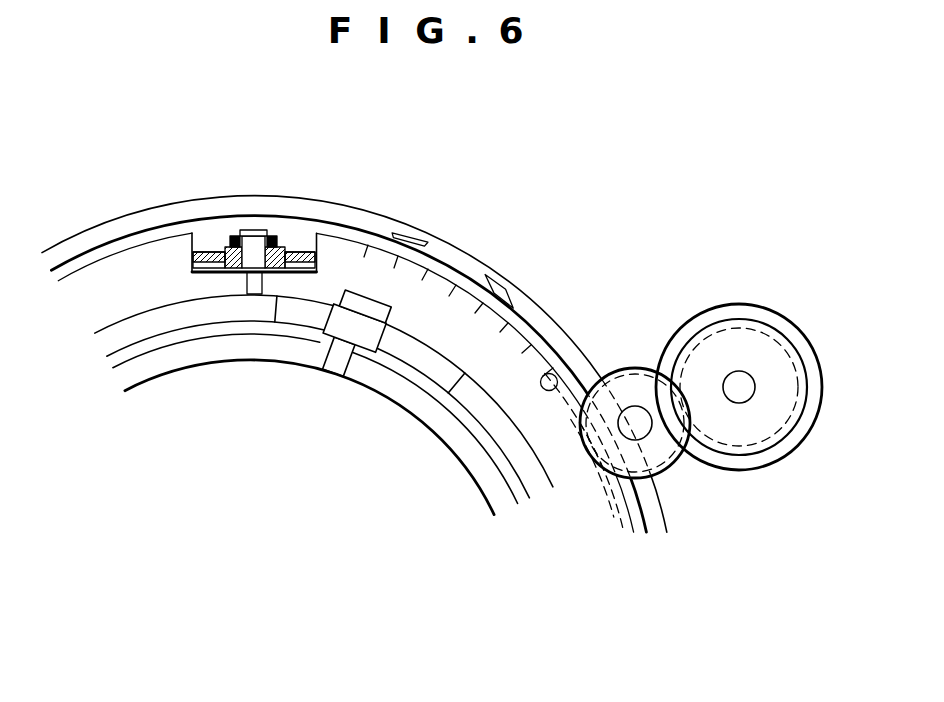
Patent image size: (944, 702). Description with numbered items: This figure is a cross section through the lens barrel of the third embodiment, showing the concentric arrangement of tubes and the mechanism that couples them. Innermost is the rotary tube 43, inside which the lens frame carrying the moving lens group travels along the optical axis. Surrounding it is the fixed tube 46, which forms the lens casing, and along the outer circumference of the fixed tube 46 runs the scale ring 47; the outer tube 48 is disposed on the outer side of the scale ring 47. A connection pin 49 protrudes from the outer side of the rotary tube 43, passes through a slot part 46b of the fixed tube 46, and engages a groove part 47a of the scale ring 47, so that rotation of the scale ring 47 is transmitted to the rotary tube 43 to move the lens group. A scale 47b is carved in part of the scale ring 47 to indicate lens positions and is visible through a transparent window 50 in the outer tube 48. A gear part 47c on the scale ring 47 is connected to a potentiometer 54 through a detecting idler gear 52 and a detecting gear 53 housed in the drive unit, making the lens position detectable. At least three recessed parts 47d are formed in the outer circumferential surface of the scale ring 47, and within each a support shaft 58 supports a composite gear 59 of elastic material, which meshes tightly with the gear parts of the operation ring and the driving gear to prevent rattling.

The rotary tube 43 is at (232, 345).
The fixed tube 46 is at (137, 327).
The slot part 46b is at (305, 312).
The scale ring 47 is at (137, 285).
The groove part 47a is at (374, 268).
The scale 47b is at (521, 337).
The gear part 47c is at (629, 540).
The recessed parts 47d is at (313, 245).
The outer tube 48 is at (353, 217).
The connection pin 49 is at (362, 328).
The transparent window 50 is at (453, 260).
The detecting idler gear 52 is at (640, 390).
The detecting gear 53 is at (723, 353).
The potentiometer 54 is at (767, 313).
The support shaft 58 is at (253, 248).
The composite gear 59 is at (220, 248).